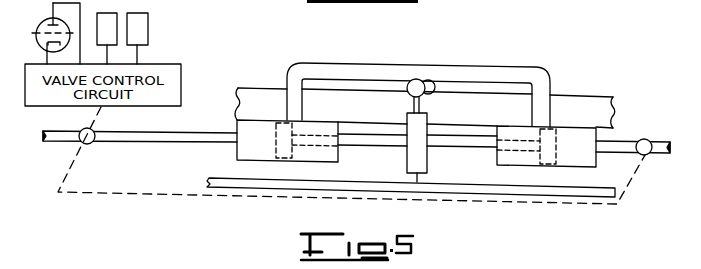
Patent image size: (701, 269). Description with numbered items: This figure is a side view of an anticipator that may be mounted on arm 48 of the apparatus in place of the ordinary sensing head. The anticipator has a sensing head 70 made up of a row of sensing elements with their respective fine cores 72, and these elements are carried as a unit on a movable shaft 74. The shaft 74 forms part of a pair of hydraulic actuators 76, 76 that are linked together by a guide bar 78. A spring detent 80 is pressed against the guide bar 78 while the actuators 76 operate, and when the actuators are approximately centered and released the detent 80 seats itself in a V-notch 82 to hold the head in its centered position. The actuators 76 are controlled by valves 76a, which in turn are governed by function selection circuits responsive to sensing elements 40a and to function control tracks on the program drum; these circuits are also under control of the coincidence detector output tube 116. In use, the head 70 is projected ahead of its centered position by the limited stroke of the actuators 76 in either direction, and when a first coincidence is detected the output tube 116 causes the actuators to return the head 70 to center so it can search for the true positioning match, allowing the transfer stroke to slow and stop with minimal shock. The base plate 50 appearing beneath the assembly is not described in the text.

The coincidence detector output tube 116 is at (42, 21).
The sensing elements 40a is at (140, 12).
The arm 48 is at (598, 96).
The base plate 50 is at (597, 180).
The sensing head 70 is at (432, 164).
The fine cores 72 is at (416, 180).
The movable shaft 74 is at (457, 146).
The hydraulic actuators 76 is at (237, 121).
The valves 76a is at (93, 129).
The guide bar 78 is at (477, 83).
The spring detent 80 is at (409, 94).
The V-notch 82 is at (430, 94).